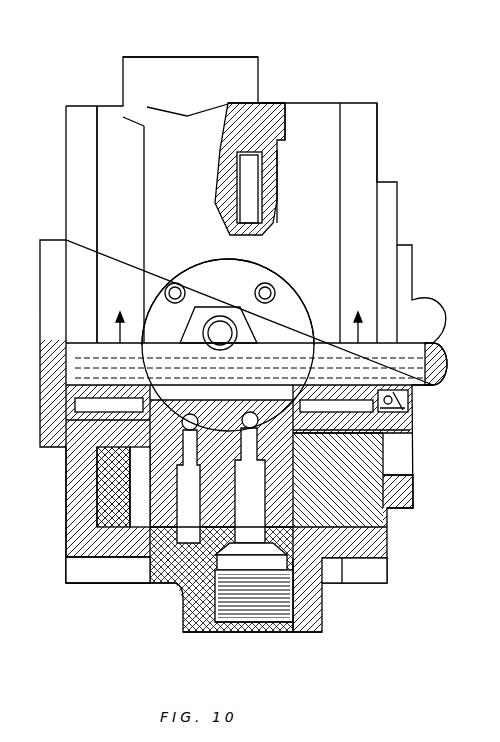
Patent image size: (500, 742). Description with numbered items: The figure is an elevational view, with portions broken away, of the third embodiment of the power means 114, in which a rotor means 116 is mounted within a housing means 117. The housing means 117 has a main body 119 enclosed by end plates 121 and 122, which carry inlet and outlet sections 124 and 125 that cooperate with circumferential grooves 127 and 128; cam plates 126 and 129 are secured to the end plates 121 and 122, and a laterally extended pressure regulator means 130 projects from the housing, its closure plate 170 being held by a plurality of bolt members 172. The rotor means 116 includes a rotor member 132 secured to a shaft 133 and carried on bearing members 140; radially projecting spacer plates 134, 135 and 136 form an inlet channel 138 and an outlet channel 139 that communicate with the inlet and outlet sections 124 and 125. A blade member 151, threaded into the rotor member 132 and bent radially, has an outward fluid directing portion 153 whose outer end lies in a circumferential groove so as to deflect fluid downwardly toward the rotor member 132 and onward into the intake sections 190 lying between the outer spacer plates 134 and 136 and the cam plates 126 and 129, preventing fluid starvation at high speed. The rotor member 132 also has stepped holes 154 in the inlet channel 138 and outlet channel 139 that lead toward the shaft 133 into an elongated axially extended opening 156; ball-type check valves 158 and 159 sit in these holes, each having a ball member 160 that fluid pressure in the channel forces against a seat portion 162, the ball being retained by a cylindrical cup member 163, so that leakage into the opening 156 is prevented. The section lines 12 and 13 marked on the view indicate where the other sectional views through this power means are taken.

The section line 12 is at (238, 316).
The section line 13 is at (494, 673).
The power means 114 is at (398, 126).
The rotor means 116 is at (200, 628).
The housing means 117 is at (78, 122).
The main body 119 is at (313, 612).
The end plate 121 is at (95, 520).
The end plate 122 is at (383, 492).
The inlet section 124 is at (200, 80).
The outlet section 125 is at (198, 632).
The cam plate 126 is at (100, 560).
The circumferential groove 127 is at (165, 540).
The circumferential groove 128 is at (318, 632).
The cam plate 129 is at (320, 490).
The pressure regulator means 130 is at (282, 279).
The rotor member 132 is at (412, 433).
The shaft 133 is at (412, 370).
The spacer plate 134 is at (143, 560).
The spacer plate 135 is at (230, 133).
The spacer plate 136 is at (277, 177).
The inlet channel 138 is at (90, 557).
The outlet channel 139 is at (342, 558).
The bearing member 140 is at (77, 455).
The blade member 151 is at (245, 205).
The fluid directing portion 153 is at (248, 172).
The stepped hole 154 is at (133, 457).
The elongated axially extended opening 156 is at (250, 412).
The ball-type check valve 158 is at (118, 622).
The ball-type check valve 159 is at (413, 433).
The ball member 160 is at (130, 505).
The seat portion 162 is at (190, 312).
The cylindrical cup member 163 is at (137, 587).
The closure plate 170 is at (228, 282).
The bolt member 172 is at (178, 284).
The intake section 190 is at (130, 567).